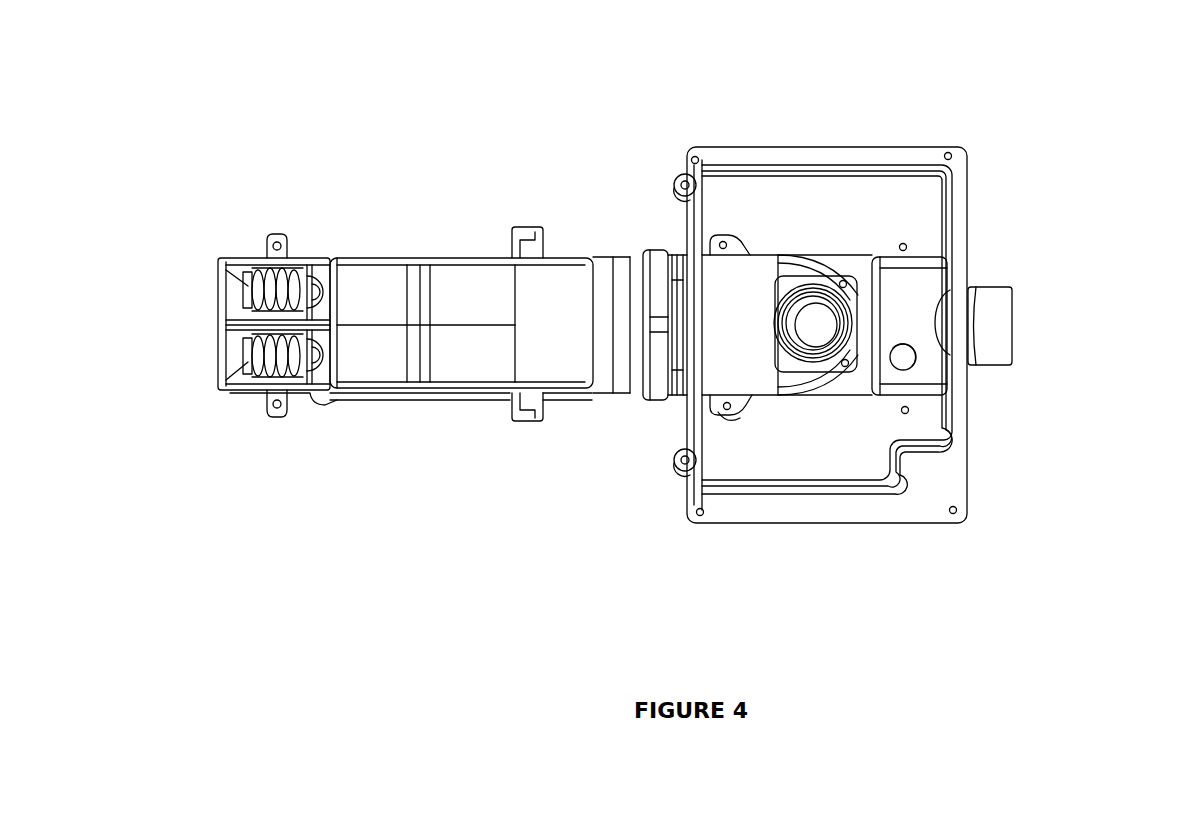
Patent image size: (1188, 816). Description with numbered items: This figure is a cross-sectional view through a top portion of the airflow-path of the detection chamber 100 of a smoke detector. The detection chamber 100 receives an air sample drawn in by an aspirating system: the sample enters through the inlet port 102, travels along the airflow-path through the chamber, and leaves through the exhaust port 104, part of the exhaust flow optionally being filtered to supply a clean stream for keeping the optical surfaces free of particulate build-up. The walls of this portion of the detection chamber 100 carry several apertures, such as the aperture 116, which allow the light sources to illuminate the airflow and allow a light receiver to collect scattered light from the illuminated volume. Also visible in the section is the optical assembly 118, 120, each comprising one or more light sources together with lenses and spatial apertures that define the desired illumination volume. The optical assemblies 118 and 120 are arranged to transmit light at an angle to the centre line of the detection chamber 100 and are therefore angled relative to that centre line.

The detection chamber 100 is at (408, 130).
The inlet port 102 is at (1020, 323).
The exhaust port 104 is at (813, 327).
The aperture 116 is at (330, 355).
The optical assembly 118 is at (257, 292).
The optical assembly 120 is at (223, 395).